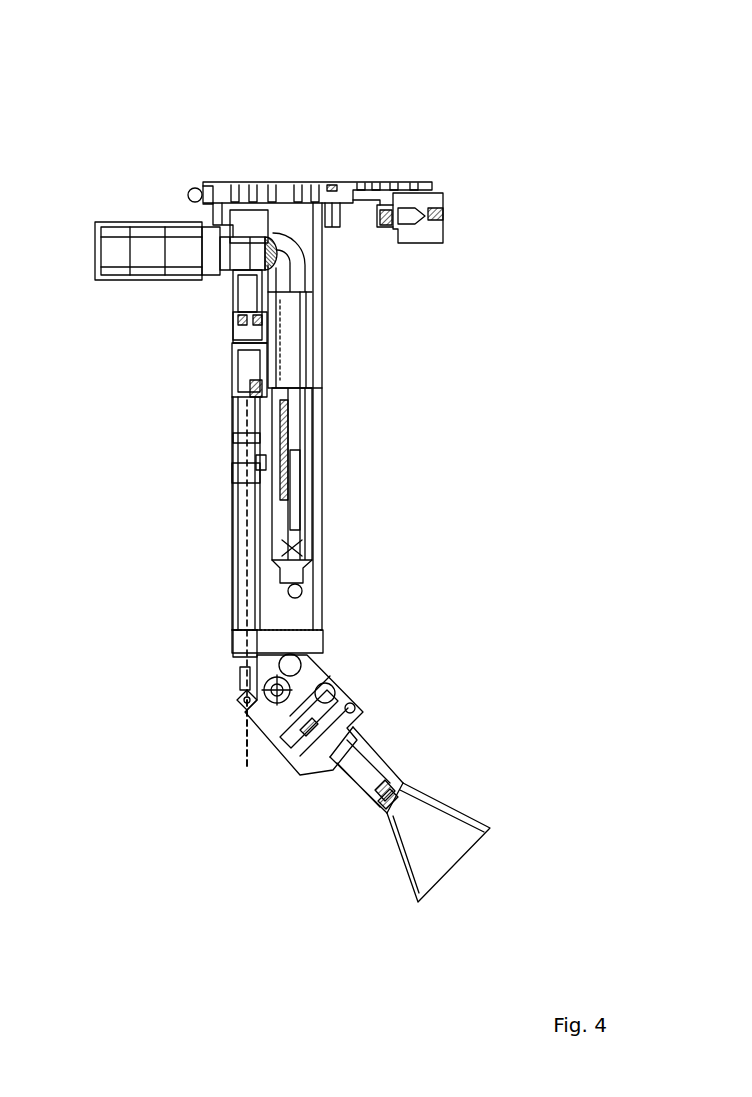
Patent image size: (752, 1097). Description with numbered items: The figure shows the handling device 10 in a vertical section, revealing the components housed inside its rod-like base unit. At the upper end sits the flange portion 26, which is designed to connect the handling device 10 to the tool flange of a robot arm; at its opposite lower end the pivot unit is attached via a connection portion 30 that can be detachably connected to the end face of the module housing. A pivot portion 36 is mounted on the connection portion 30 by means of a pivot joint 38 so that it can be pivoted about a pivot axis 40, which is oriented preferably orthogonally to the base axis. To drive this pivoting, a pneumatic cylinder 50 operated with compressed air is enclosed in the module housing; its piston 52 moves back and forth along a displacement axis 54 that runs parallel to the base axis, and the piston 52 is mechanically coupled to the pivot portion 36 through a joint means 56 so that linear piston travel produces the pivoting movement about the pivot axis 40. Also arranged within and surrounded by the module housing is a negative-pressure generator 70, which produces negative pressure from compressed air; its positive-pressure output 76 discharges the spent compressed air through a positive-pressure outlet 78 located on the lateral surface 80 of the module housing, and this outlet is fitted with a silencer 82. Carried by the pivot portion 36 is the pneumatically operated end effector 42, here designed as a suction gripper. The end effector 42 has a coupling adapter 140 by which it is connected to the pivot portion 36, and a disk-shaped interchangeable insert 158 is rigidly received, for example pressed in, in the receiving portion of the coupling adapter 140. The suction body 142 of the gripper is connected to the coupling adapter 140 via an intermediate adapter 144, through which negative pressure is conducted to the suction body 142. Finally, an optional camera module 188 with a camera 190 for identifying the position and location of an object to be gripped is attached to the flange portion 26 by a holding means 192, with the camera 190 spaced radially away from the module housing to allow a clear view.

The handling device 10 is at (290, 76).
The flange portion 26 is at (244, 180).
The connection portion 30 is at (338, 632).
The pivot portion 36 is at (276, 745).
The pivot joint 38 is at (266, 688).
The pivot axis 40 is at (245, 678).
The end effector 42 is at (457, 676).
The pneumatic cylinder 50 is at (243, 457).
The piston 52 is at (240, 509).
The displacement axis 54 is at (246, 748).
The joint means 56 is at (222, 696).
The negative-pressure generator 70 is at (297, 458).
The positive-pressure output 76 is at (300, 316).
The positive-pressure outlet 78 is at (245, 270).
The lateral surface 80 is at (226, 330).
The silencer 82 is at (105, 250).
The coupling adapter 140 is at (358, 724).
The suction body 142 is at (455, 828).
The intermediate adapter 144 is at (380, 769).
The interchangeable insert 158 is at (351, 703).
The camera module 188 is at (412, 156).
The camera 190 is at (430, 238).
The holding means 192 is at (349, 180).